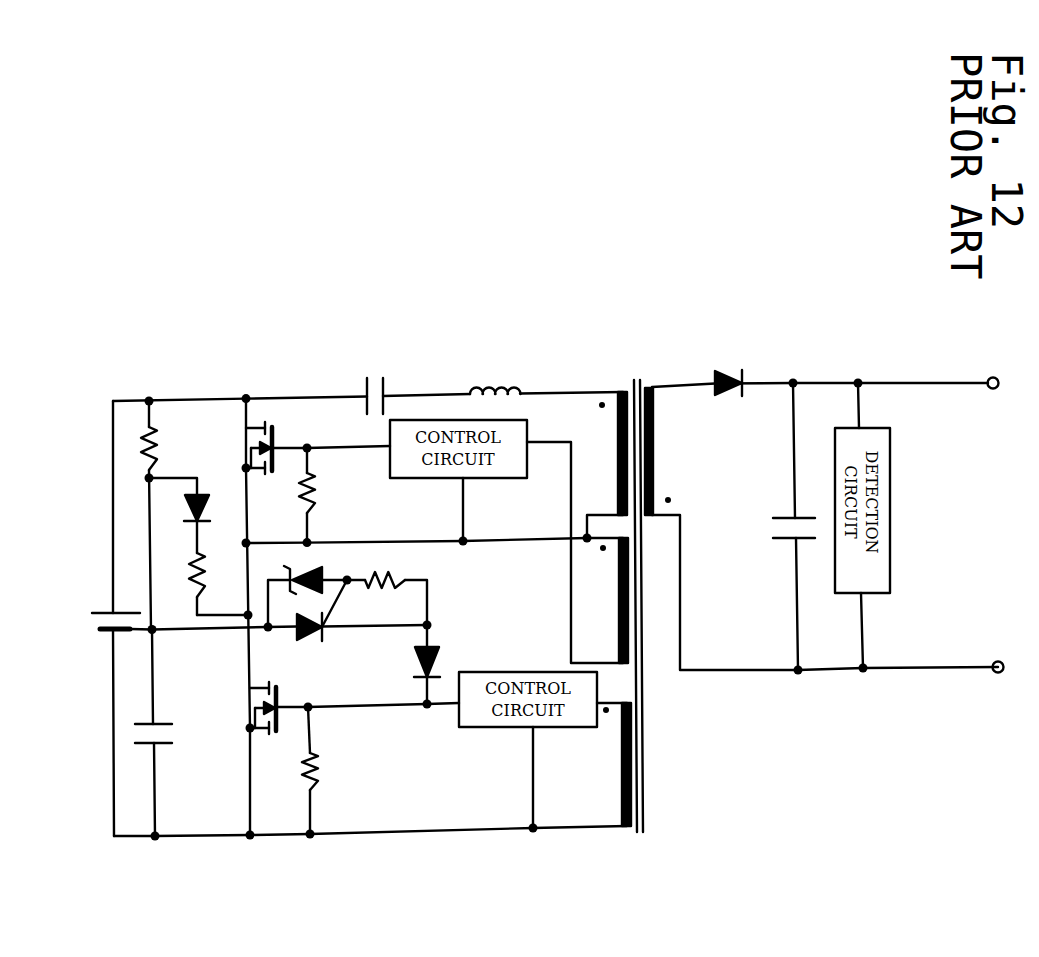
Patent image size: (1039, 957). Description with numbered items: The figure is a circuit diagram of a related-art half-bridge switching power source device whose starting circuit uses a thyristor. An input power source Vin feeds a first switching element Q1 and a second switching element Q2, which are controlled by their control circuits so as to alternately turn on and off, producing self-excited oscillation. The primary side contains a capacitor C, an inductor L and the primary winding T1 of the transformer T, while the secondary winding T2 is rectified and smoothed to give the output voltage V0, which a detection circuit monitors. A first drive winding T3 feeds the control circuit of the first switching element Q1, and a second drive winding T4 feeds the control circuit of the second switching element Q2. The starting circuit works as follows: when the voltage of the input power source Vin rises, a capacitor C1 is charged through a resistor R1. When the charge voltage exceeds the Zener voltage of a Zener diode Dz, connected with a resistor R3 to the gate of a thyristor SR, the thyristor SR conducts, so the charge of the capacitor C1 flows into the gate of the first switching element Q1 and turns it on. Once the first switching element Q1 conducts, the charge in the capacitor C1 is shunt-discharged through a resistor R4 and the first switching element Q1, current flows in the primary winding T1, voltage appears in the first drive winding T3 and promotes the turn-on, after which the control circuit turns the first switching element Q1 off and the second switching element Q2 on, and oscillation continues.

The input power source Vin is at (102, 607).
The resistor R1 is at (166, 448).
The resistor R4 is at (214, 584).
The second switching element Q2 is at (253, 448).
The first switching element Q1 is at (260, 708).
The capacitor C1 is at (170, 733).
The Zener diode Dz is at (312, 589).
The resistor R3 is at (387, 585).
The thyristor SR is at (322, 626).
The capacitor C is at (360, 383).
The inductor L is at (495, 374).
The transformer T is at (634, 597).
The primary winding T1 is at (603, 465).
The secondary winding T2 is at (821, 526).
The first drive winding T3 is at (608, 764).
The second drive winding T4 is at (606, 600).
The output voltage V0 is at (989, 507).